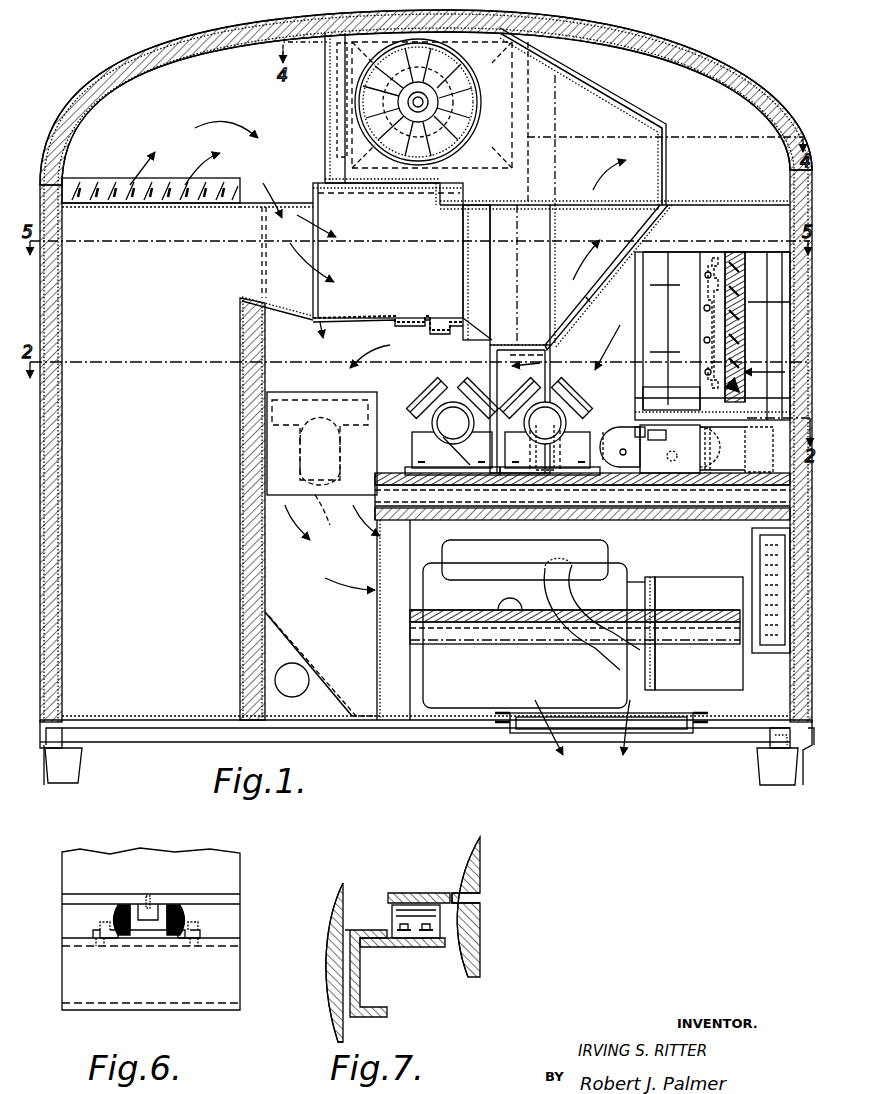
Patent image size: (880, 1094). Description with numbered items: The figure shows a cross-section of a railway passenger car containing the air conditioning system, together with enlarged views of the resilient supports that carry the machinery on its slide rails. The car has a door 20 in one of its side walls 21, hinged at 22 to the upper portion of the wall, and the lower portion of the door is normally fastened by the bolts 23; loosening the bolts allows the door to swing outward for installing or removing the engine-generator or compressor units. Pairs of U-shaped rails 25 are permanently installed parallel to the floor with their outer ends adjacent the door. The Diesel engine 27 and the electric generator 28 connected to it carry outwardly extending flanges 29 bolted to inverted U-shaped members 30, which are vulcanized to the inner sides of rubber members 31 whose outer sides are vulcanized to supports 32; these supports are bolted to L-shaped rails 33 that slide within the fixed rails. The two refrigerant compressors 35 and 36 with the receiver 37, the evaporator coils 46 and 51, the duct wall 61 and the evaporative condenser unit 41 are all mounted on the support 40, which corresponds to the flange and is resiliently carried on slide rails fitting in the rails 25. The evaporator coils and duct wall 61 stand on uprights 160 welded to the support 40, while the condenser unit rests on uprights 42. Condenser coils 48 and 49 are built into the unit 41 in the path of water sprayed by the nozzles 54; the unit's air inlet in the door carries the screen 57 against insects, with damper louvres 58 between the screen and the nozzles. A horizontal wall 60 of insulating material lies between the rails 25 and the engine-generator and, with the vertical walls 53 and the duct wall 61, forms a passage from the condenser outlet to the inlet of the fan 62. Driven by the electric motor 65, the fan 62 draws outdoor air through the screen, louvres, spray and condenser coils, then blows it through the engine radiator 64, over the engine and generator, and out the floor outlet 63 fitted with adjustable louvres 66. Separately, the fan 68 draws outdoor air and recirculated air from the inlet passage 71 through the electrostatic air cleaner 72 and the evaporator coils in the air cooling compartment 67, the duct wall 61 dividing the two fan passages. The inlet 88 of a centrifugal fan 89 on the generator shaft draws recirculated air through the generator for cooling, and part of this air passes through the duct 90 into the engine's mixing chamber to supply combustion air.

In FIG. 1, the door 20 is at (792, 696).
In FIG. 1, the side wall 21 is at (806, 775).
In FIG. 1, the hinge 22 is at (790, 170).
In FIG. 1, the bolts 23 is at (785, 756).
In FIG. 7, the U-shaped rails 25 is at (338, 993).
In FIG. 1, the Diesel engine 27 is at (481, 593).
In FIG. 7, the Diesel engine 27 is at (465, 970).
In FIG. 1, the electric generator 28 is at (705, 600).
In FIG. 6, the flanges 29 is at (242, 899).
In FIG. 7, the flanges 29 is at (400, 892).
In FIG. 6, the inverted U-shaped members 30 is at (158, 905).
In FIG. 1, the rubber members 31 is at (575, 603).
In FIG. 6, the rubber members 31 is at (183, 913).
In FIG. 7, the rubber members 31 is at (432, 893).
In FIG. 1, the supports 32 is at (575, 633).
In FIG. 6, the supports 32 is at (116, 920).
In FIG. 7, the supports 32 is at (400, 926).
In FIG. 6, the L-shaped rails 33 is at (242, 944).
In FIG. 7, the L-shaped rails 33 is at (410, 950).
In FIG. 1, the refrigerant compressor 35 is at (462, 431).
In FIG. 1, the refrigerant compressor 36 is at (554, 431).
In FIG. 1, the receiver 37 is at (675, 449).
In FIG. 1, the support 40 is at (728, 473).
In FIG. 1, the evaporative condenser unit 41 is at (711, 250).
In FIG. 1, the uprights 42 is at (625, 440).
In FIG. 1, the evaporator coil 46 is at (503, 275).
In FIG. 1, the condenser coil 48 is at (655, 319).
In FIG. 1, the condenser coil 49 is at (684, 319).
In FIG. 1, the evaporator coil 51 is at (538, 275).
In FIG. 1, the vertical walls 53 is at (240, 545).
In FIG. 1, the nozzles 54 is at (705, 273).
In FIG. 1, the screen 57 is at (790, 274).
In FIG. 1, the damper louvres 58 is at (736, 346).
In FIG. 1, the wall of insulating material 60 is at (604, 519).
In FIG. 1, the duct wall 61 is at (590, 335).
In FIG. 1, the fan 62 is at (277, 408).
In FIG. 1, the outlet 63 is at (592, 737).
In FIG. 1, the engine radiator 64 is at (382, 558).
In FIG. 1, the electric motor 65 is at (332, 547).
In FIG. 1, the louvres 66 is at (535, 725).
In FIG. 1, the air cooling compartment 67 is at (482, 265).
In FIG. 1, the fan 68 is at (505, 90).
In FIG. 1, the recirculated air inlet passage 71 is at (158, 265).
In FIG. 1, the electrostatic air cleaner 72 is at (410, 282).
In FIG. 1, the inlet 88 is at (765, 553).
In FIG. 1, the centrifugal fan 89 is at (742, 680).
In FIG. 1, the duct 90 is at (598, 655).
In FIG. 1, the uprights 160 is at (500, 370).